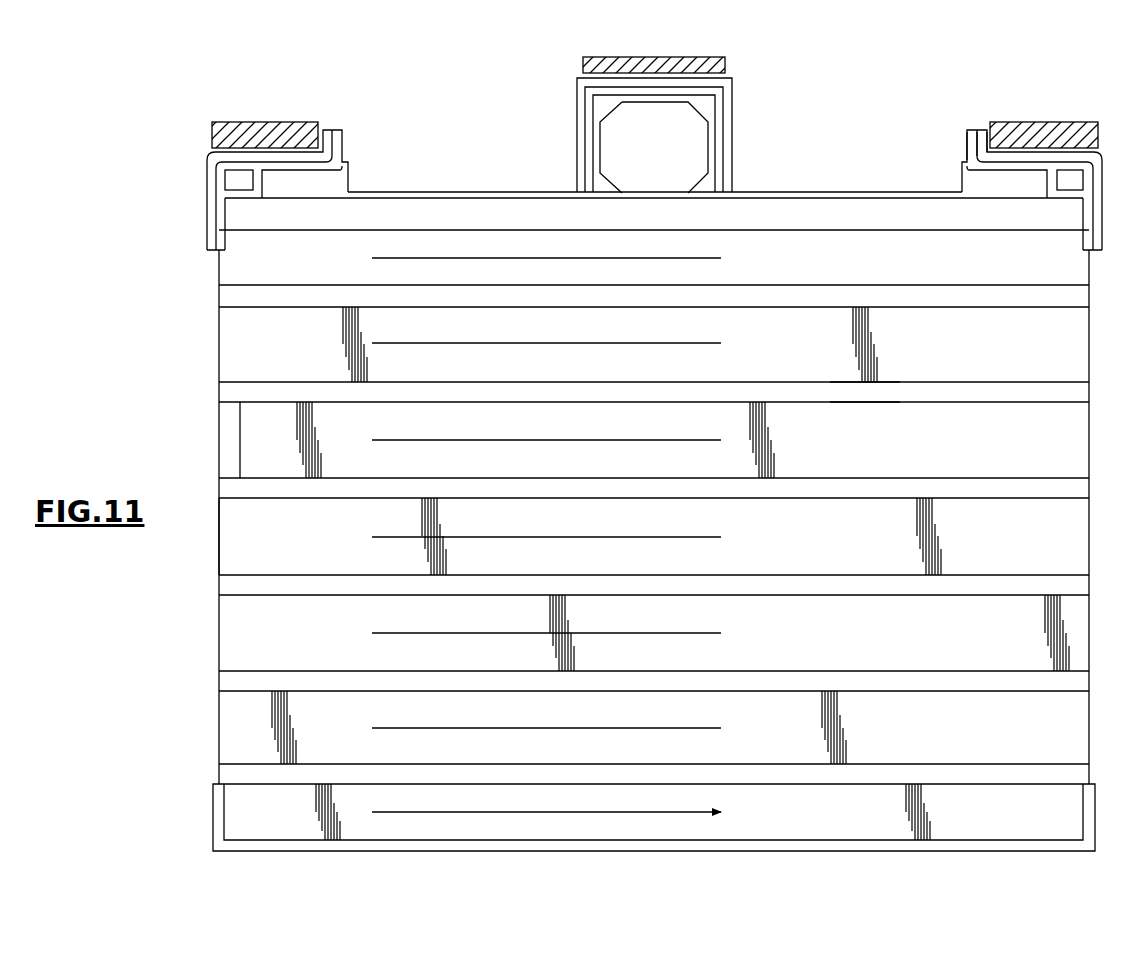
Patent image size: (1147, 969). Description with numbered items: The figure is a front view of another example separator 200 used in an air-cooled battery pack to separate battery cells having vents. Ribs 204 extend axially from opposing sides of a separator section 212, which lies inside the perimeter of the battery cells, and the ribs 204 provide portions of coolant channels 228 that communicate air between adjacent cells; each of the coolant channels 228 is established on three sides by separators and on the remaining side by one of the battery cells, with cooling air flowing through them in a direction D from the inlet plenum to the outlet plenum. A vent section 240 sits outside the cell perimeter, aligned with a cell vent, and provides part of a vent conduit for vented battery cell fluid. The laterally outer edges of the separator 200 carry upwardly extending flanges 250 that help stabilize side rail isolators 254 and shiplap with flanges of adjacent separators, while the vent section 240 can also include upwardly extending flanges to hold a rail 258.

The separator 200 is at (1036, 84).
The ribs 204 is at (838, 488).
The separator section 212 is at (243, 527).
The coolant channels 228 is at (262, 448).
The vent section 240 is at (577, 140).
The flanges 250 is at (968, 156).
The side rail isolators 254 is at (1060, 122).
The rail 258 is at (247, 121).